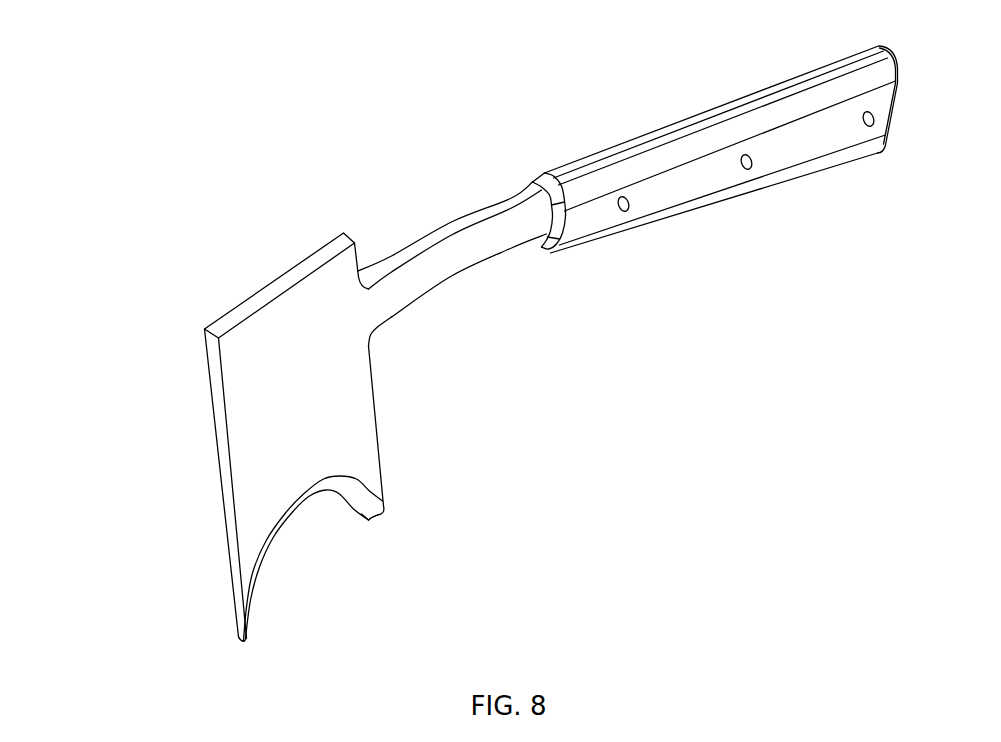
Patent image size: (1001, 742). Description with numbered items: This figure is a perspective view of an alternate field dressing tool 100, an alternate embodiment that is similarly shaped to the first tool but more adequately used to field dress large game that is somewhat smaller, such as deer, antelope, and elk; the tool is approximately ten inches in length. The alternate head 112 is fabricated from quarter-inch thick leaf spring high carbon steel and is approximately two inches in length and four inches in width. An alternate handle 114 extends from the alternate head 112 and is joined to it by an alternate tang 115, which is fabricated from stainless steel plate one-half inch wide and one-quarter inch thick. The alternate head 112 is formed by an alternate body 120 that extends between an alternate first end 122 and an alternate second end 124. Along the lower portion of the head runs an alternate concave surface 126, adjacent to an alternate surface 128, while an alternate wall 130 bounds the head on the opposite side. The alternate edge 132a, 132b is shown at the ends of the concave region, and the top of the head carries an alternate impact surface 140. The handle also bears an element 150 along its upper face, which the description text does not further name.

The alternate field dressing tool 100 is at (483, 362).
The alternate head 112 is at (283, 362).
The alternate handle 114 is at (715, 161).
The alternate tang 115 is at (423, 222).
The alternate body 120 is at (390, 331).
The alternate first end 122 is at (431, 470).
The alternate second end 124 is at (356, 114).
The alternate concave surface 126 is at (270, 528).
The alternate surface 128 is at (380, 426).
The alternate wall 130 is at (228, 515).
The alternate edge 132a is at (368, 521).
The alternate edge 132b is at (269, 670).
The alternate impact surface 140 is at (245, 305).
The handle upper surface 150 is at (667, 127).